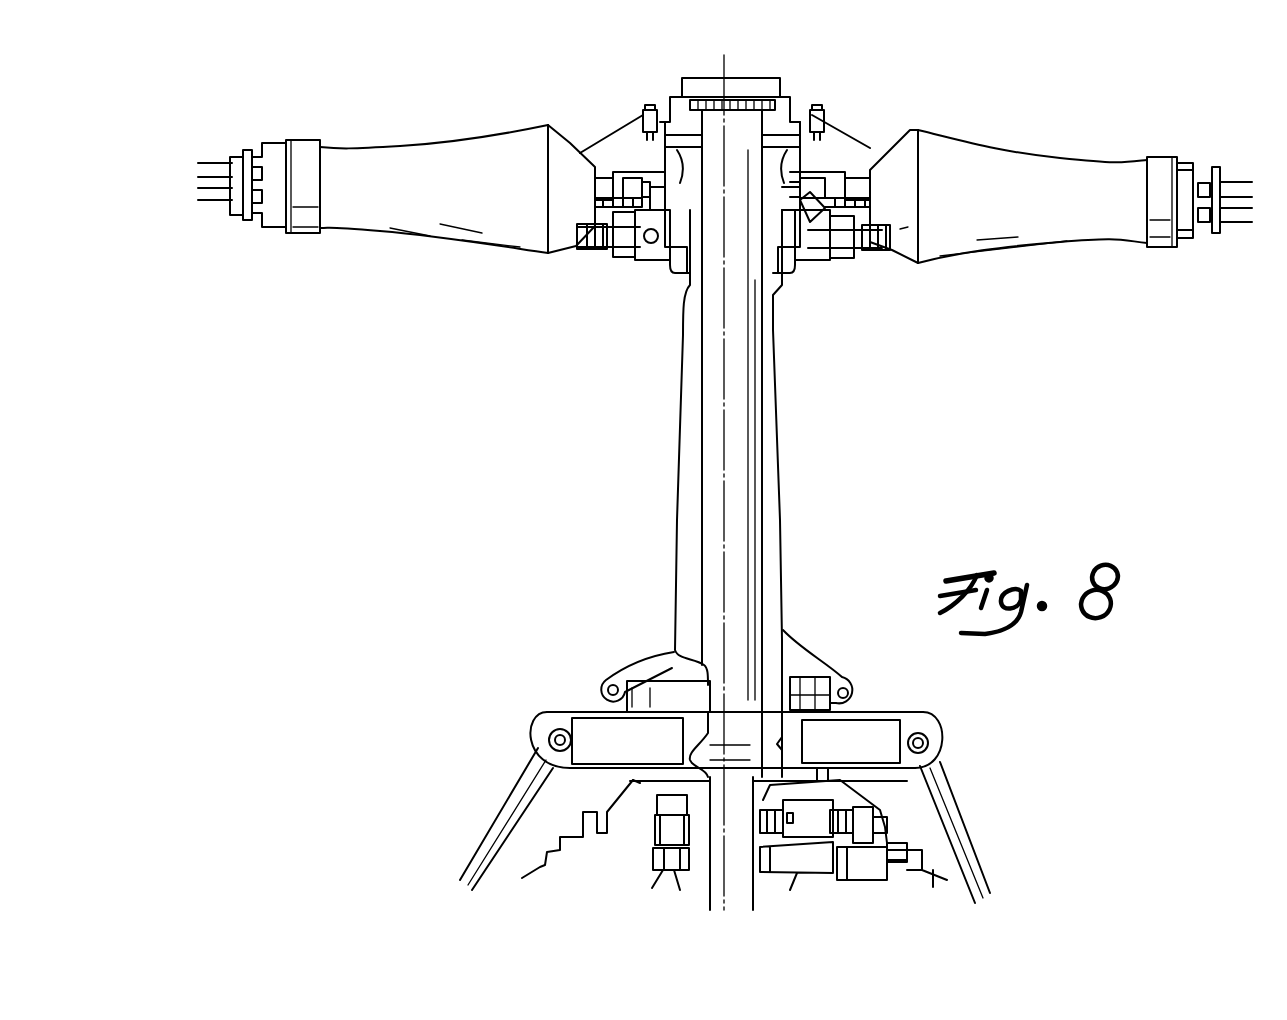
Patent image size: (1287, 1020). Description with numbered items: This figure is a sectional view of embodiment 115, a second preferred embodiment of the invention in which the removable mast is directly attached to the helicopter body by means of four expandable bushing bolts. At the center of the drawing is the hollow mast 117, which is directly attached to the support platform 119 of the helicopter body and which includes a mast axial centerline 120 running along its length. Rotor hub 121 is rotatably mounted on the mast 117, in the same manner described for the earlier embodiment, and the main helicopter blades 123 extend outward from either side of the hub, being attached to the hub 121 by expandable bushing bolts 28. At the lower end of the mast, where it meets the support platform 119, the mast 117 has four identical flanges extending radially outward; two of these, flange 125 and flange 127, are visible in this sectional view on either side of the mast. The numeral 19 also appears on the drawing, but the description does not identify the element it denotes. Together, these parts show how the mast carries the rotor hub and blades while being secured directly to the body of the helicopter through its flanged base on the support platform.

The embodiment 115 is at (576, 104).
The rotor hub 121 is at (872, 126).
The main helicopter blades 123 is at (213, 166).
The expandable bushing bolts 28 is at (249, 219).
The hollow mast 117 is at (683, 372).
The mast axial centerline 120 is at (725, 400).
The support platform 119 is at (568, 708).
The flange 127 is at (640, 650).
The flange 125 is at (831, 657).
The pitch link lug 19 is at (605, 672).